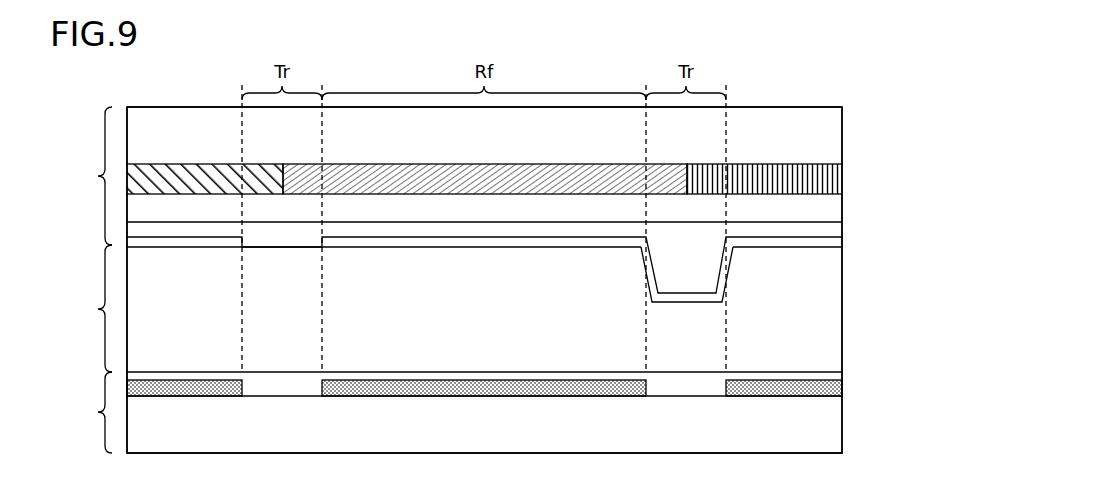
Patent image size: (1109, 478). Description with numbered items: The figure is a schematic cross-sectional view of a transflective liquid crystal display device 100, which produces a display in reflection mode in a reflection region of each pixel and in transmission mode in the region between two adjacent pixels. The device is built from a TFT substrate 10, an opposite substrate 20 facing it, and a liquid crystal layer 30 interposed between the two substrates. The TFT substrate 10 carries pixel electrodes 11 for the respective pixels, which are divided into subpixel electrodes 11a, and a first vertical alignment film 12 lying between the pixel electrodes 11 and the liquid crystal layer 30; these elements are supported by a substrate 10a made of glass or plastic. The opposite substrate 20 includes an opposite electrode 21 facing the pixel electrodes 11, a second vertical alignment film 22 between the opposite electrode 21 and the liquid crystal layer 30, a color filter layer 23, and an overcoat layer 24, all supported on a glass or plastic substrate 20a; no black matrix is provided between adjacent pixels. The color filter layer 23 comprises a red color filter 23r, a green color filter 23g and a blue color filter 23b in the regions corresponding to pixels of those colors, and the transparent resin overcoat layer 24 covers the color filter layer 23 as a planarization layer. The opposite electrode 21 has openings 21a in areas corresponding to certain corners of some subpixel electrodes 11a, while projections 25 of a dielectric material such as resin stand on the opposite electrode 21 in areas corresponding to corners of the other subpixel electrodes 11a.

The liquid crystal display device 100 is at (912, 88).
The TFT substrate 10 is at (498, 409).
The substrate 10a is at (833, 428).
The pixel electrodes 11 is at (484, 412).
The subpixel electrodes 11a is at (183, 397).
The first vertical alignment film 12 is at (844, 377).
The opposite substrate 20 is at (496, 223).
The substrate 20a is at (830, 137).
The opposite electrode 21 is at (520, 279).
The openings 21a is at (282, 241).
The second vertical alignment film 22 is at (833, 243).
The color filter layer 23 is at (507, 161).
The red color filter 23r is at (212, 167).
The green color filter 23g is at (483, 170).
The blue color filter 23b is at (767, 173).
The overcoat layer 24 is at (830, 212).
The projections 25 is at (683, 289).
The liquid crystal layer 30 is at (457, 308).